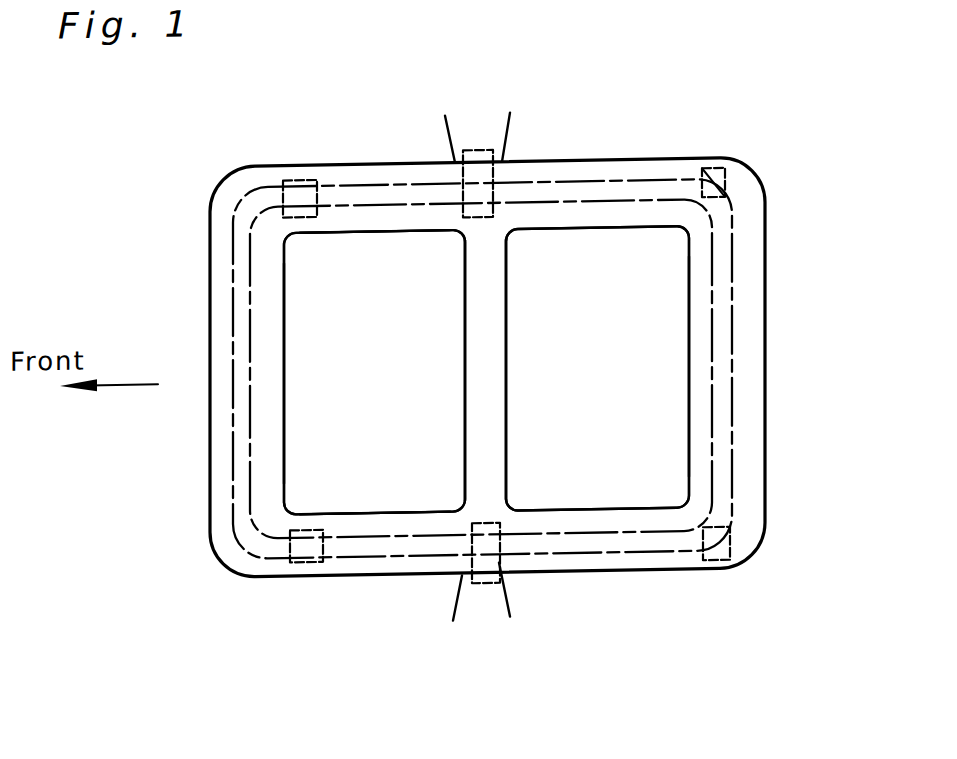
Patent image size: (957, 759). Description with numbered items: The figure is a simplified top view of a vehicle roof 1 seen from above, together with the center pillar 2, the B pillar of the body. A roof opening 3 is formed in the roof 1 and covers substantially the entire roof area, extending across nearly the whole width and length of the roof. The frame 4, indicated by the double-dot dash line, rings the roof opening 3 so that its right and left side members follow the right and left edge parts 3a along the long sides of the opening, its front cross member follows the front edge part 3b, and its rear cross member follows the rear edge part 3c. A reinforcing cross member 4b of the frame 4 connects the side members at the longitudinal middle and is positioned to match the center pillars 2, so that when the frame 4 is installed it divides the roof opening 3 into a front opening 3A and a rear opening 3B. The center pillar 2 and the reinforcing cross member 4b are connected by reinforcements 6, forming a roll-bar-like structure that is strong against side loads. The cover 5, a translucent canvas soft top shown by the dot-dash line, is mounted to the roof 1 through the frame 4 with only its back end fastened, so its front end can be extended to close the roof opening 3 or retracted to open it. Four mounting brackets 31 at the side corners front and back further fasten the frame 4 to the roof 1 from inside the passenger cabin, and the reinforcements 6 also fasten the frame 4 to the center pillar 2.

The vehicle roof 1 is at (783, 466).
The center pillar 2 is at (509, 127).
The roof opening 3 is at (296, 424).
The front opening 3A is at (398, 418).
The rear opening 3B is at (628, 422).
The right and left edge parts 3a is at (357, 228).
The front edge part 3b is at (272, 341).
The rear edge part 3c is at (690, 358).
The mounting brackets 31 is at (298, 177).
The frame 4 is at (740, 238).
The reinforcing cross member 4b is at (508, 372).
The cover 5 is at (715, 339).
The reinforcement 6 is at (468, 194).